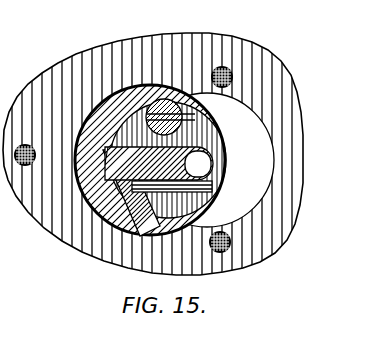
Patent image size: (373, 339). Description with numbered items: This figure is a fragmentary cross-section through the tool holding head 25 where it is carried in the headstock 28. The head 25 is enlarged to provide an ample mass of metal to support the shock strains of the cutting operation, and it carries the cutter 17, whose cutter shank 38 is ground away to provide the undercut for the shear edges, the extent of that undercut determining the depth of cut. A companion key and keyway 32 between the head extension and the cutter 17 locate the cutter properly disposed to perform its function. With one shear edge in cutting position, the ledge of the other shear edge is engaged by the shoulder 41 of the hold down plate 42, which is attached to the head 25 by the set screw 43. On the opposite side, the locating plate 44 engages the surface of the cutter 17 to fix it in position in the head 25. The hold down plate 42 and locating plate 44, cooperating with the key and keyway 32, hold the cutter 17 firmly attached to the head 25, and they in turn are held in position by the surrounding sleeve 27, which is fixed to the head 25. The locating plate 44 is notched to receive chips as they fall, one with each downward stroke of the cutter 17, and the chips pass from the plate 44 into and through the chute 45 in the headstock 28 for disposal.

The headstock 28 is at (296, 76).
The chute 45 is at (263, 171).
The cutter shank 38 is at (222, 154).
The key and keyway 32 is at (112, 163).
The shoulder 41 is at (210, 135).
The hold down plate 42 is at (200, 124).
The tool holding head 25 is at (122, 215).
The cutter 17 is at (130, 172).
The sleeve 27 is at (215, 166).
The locating plate 44 is at (210, 189).
The set screw 43 is at (206, 107).